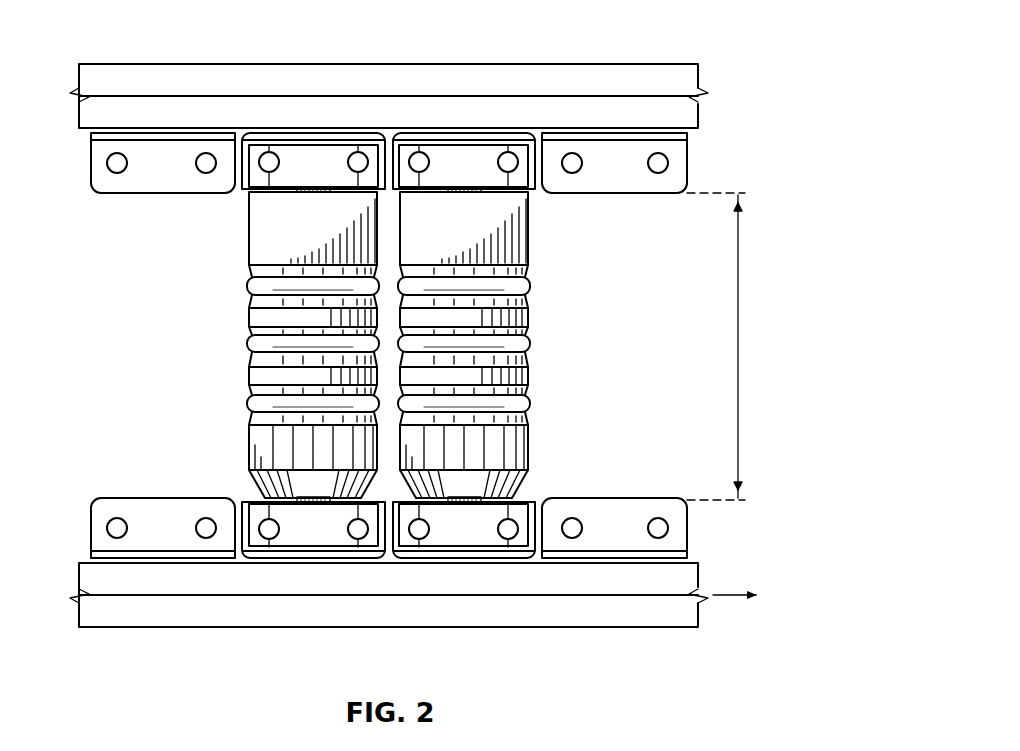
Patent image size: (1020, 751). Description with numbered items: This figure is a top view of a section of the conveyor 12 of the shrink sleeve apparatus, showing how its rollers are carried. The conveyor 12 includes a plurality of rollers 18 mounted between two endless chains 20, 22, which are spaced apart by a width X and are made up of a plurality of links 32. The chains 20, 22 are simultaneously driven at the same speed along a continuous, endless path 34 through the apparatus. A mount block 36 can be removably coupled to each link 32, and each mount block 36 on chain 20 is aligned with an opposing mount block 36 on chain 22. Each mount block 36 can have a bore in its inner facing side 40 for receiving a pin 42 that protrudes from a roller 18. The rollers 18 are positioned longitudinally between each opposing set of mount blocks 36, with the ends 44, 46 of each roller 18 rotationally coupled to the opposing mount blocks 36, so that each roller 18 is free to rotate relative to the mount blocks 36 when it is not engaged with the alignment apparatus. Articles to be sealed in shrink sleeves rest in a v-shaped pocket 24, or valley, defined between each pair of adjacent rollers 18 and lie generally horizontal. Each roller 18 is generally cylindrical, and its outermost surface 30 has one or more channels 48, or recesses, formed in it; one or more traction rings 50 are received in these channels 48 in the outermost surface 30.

The conveyor 12 is at (663, 39).
The roller 18 is at (388, 437).
The endless chain 20 is at (683, 172).
The endless chain 22 is at (678, 523).
The v-shaped pocket 24 is at (389, 204).
The outermost surface 30 is at (287, 443).
The link 32 is at (277, 138).
The endless path 34 is at (737, 597).
The mount block 36 is at (323, 155).
The inner facing side 40 is at (542, 507).
The pin 42 is at (272, 437).
The end 44 is at (287, 228).
The end 46 is at (287, 478).
The channel 48 is at (507, 300).
The traction ring 50 is at (287, 344).
The width X is at (741, 347).